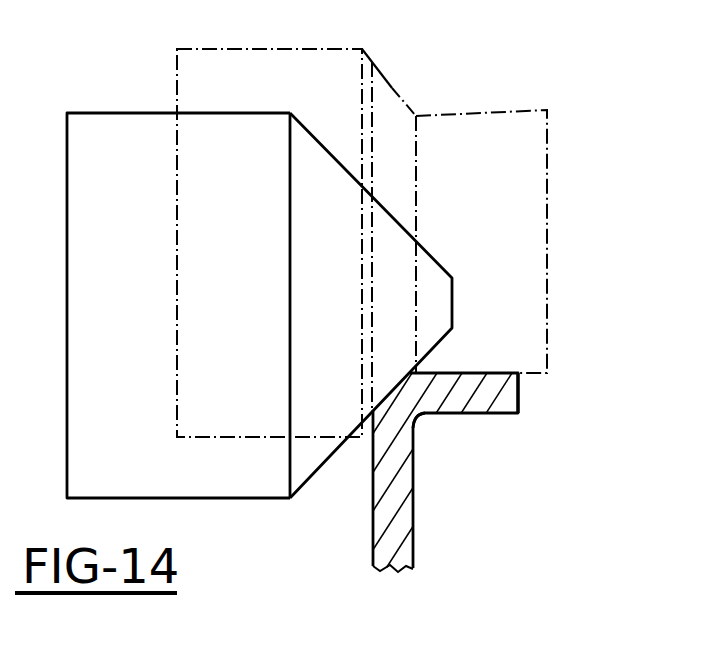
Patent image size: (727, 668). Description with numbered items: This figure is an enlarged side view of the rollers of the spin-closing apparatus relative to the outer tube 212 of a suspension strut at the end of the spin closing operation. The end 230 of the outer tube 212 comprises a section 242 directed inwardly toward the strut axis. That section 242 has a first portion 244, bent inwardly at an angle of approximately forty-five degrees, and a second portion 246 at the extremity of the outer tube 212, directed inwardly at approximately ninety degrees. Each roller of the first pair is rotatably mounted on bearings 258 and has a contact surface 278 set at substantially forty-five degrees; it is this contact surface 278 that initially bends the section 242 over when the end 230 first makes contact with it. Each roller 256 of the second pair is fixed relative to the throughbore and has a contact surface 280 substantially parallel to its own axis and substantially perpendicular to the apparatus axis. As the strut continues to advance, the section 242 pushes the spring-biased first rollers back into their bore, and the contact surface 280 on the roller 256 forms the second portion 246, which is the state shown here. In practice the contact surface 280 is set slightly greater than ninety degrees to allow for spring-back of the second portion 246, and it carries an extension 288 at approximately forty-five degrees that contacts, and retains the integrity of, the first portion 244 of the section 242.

The outer tube 212 is at (395, 538).
The end of the outer tube 230 is at (550, 396).
The section of the outer tube 242 is at (490, 441).
The first portion 244 is at (398, 410).
The second portion 246 is at (492, 402).
The roller of the second pair of rollers 256 is at (323, 62).
The bearings 258 is at (205, 485).
The contact surface 278 is at (320, 470).
The contact surface 280 is at (480, 112).
The extension 288 is at (390, 90).